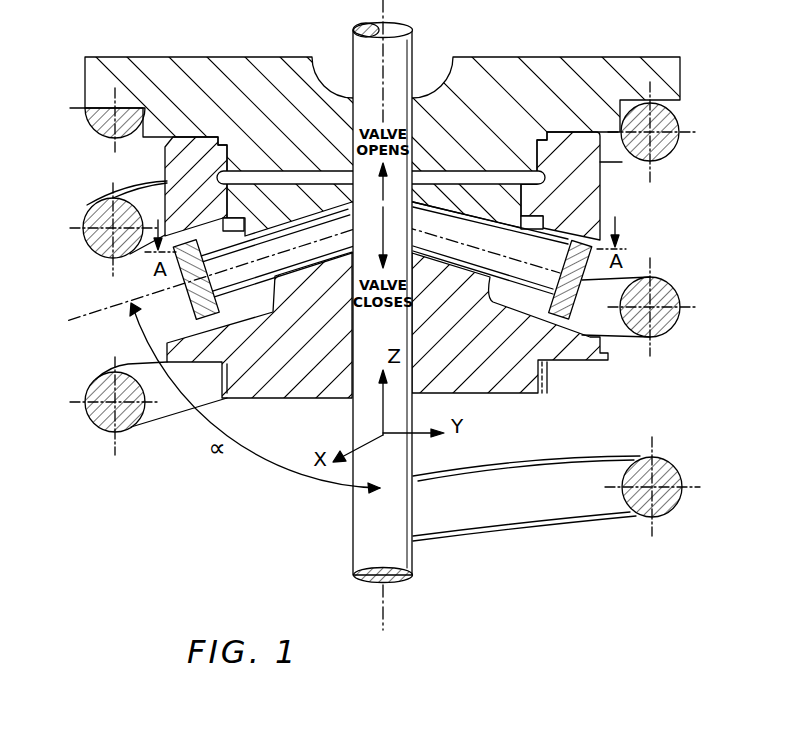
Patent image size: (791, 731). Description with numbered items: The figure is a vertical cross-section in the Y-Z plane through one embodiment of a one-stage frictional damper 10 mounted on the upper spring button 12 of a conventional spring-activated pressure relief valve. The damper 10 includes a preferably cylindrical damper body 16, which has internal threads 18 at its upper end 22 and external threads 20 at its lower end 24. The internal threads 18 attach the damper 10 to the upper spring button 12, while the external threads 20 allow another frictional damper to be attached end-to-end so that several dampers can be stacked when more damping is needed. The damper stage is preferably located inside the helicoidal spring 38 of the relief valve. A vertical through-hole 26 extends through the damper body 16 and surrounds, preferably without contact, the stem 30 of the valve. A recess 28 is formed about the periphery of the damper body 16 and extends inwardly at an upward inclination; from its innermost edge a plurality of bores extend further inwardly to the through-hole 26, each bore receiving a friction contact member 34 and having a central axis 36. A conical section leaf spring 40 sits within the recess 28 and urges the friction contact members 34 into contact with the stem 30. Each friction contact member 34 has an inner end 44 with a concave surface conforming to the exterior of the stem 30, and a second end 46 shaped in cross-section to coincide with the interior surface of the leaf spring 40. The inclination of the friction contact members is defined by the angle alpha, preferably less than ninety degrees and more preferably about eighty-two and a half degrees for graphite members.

The frictional damper 10 is at (113, 195).
The upper spring button 12 is at (167, 80).
The damper body 16 is at (563, 200).
The internal threads 18 is at (547, 155).
The external threads 20 is at (547, 378).
The upper end 22 is at (163, 152).
The lower end 24 is at (395, 365).
The through-hole 26 is at (415, 333).
The recess 28 is at (337, 285).
The stem 30 is at (367, 518).
The friction contact member 34 is at (600, 222).
The central axis 36 is at (655, 272).
The helicoidal spring 38 is at (663, 503).
The conical section leaf spring 40 is at (573, 305).
The inner end 44 is at (432, 222).
The second end 46 is at (228, 296).